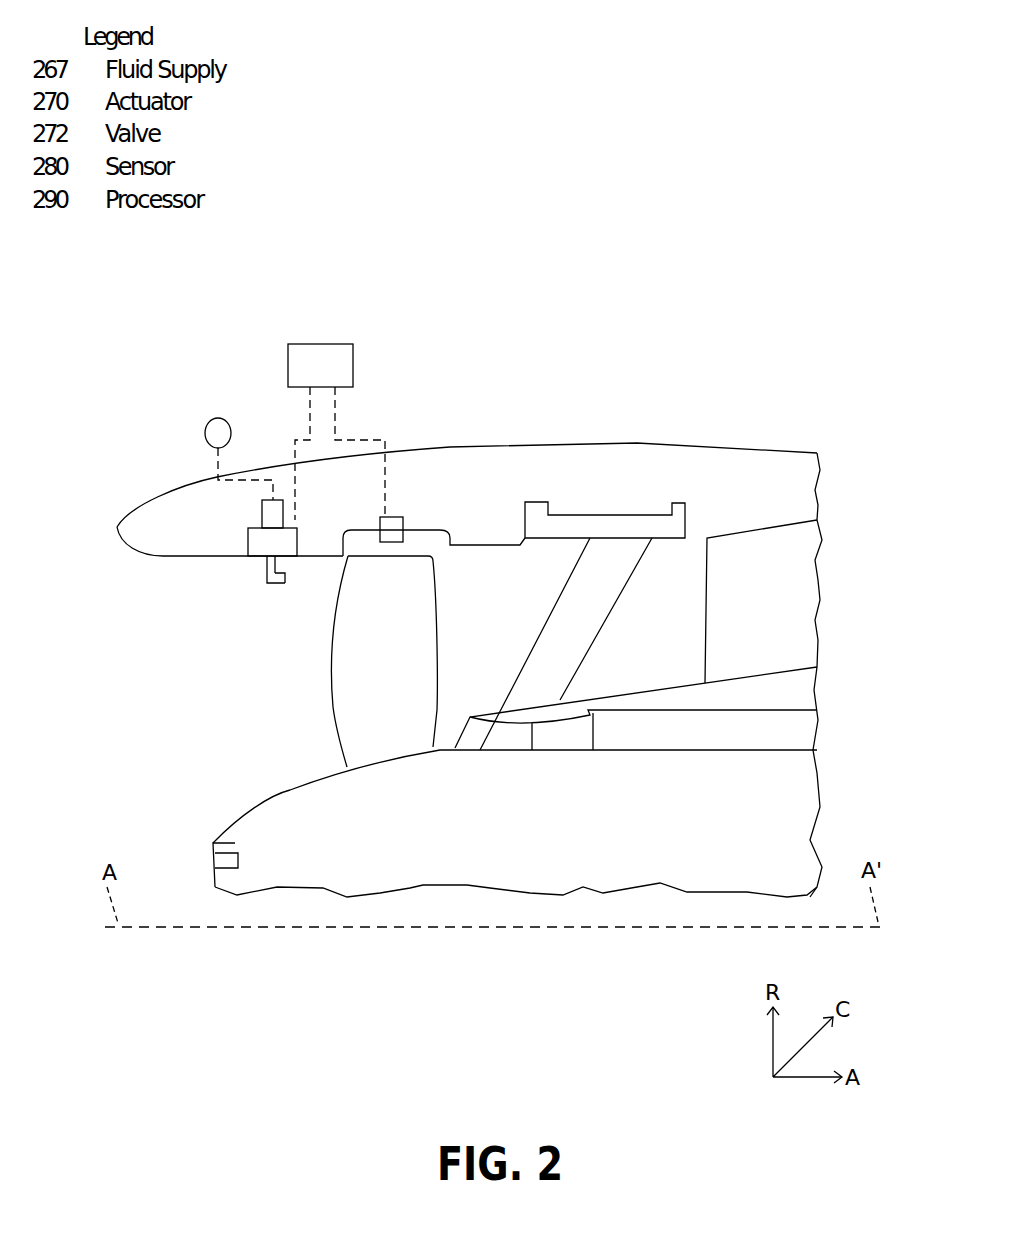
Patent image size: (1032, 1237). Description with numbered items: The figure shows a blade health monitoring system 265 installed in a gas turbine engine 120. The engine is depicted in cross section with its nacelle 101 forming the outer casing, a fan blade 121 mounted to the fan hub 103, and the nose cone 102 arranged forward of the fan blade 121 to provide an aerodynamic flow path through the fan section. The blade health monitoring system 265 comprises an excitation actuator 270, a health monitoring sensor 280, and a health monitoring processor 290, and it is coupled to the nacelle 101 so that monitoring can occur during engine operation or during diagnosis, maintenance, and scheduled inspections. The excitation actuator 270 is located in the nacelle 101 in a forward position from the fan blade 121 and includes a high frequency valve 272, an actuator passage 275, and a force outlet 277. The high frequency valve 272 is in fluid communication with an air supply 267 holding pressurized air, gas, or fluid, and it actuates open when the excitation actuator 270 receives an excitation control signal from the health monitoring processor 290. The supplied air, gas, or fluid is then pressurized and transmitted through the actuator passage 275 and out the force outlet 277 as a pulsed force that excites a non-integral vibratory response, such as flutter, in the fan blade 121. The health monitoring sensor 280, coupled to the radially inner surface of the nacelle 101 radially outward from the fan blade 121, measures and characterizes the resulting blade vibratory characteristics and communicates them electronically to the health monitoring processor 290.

The gas turbine engine 120 is at (830, 327).
The nacelle 101 is at (473, 462).
The nose cone 102 is at (213, 843).
The fan hub 103 is at (549, 834).
The fan blades 121 is at (347, 718).
The blade health monitoring system 265 is at (245, 383).
The air supply 267 is at (208, 426).
The excitation actuator 270 is at (262, 548).
The high frequency valve 272 is at (282, 500).
The actuator passage 275 is at (272, 585).
The force outlet 277 is at (287, 590).
The health monitoring sensor 280 is at (393, 517).
The health monitoring processor 290 is at (353, 360).